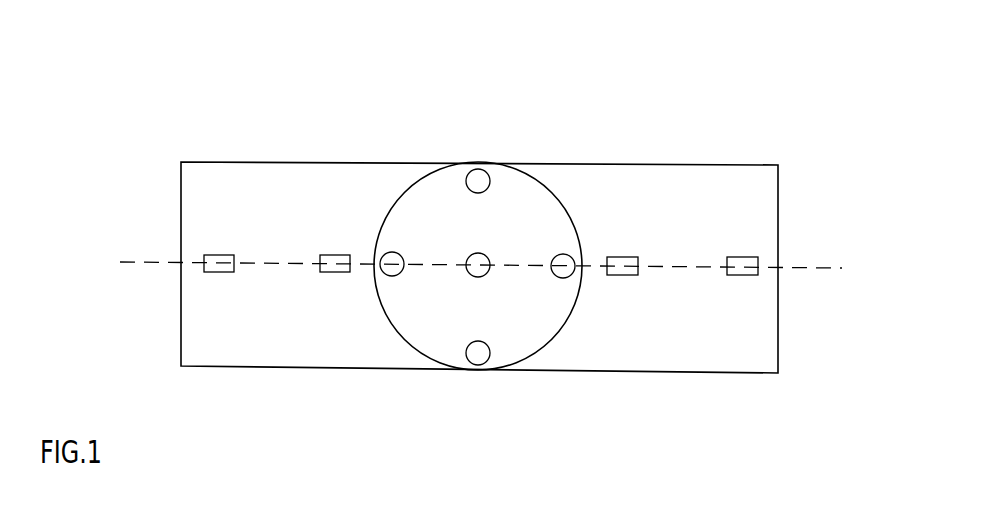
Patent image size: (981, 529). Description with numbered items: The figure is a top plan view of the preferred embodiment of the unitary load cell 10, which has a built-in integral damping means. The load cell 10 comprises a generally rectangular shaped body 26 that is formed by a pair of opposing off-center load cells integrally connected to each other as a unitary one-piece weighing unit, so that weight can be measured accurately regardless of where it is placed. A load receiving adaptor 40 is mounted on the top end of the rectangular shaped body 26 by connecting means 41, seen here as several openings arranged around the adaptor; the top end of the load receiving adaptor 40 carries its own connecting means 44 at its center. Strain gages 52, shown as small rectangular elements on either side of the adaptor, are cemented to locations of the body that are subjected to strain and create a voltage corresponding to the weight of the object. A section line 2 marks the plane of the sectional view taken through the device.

The load cell 10 is at (630, 40).
The rectangular shaped body 26 is at (683, 162).
The section line 2- 2 is at (123, 259).
The load receiving adaptor 40 is at (540, 359).
The connecting means 41 is at (480, 176).
The connecting means 44 is at (480, 262).
The strain gages 52 is at (327, 272).